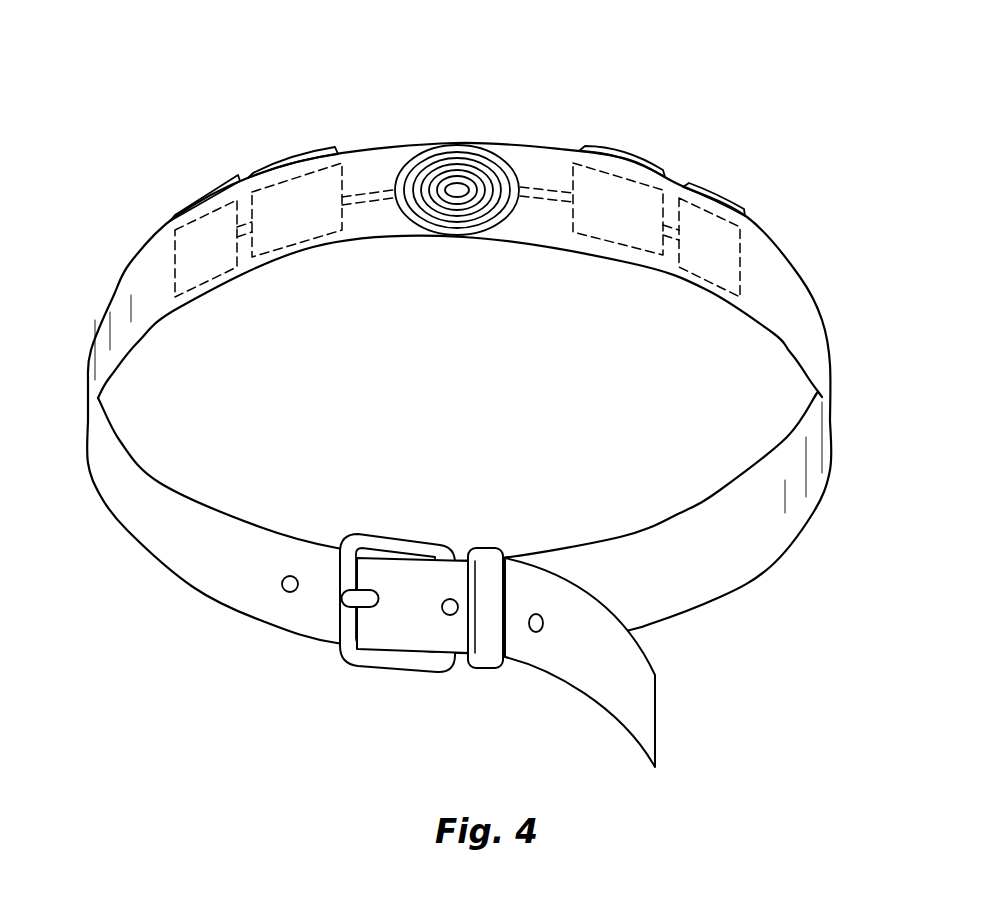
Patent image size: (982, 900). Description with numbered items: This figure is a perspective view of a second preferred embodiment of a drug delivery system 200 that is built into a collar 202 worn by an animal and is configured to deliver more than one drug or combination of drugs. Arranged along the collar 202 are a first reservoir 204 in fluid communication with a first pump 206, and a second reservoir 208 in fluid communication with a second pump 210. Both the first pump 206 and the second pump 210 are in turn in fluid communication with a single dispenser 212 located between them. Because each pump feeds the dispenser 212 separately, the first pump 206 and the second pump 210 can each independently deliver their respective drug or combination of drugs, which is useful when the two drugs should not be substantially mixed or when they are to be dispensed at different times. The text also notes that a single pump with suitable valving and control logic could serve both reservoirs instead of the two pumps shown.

The drug delivery system 200 is at (487, 386).
The collar 202 is at (807, 318).
The first reservoir 204 is at (198, 195).
The first pump 206 is at (287, 160).
The second reservoir 208 is at (713, 192).
The second pump 210 is at (623, 157).
The dispenser 212 is at (460, 155).